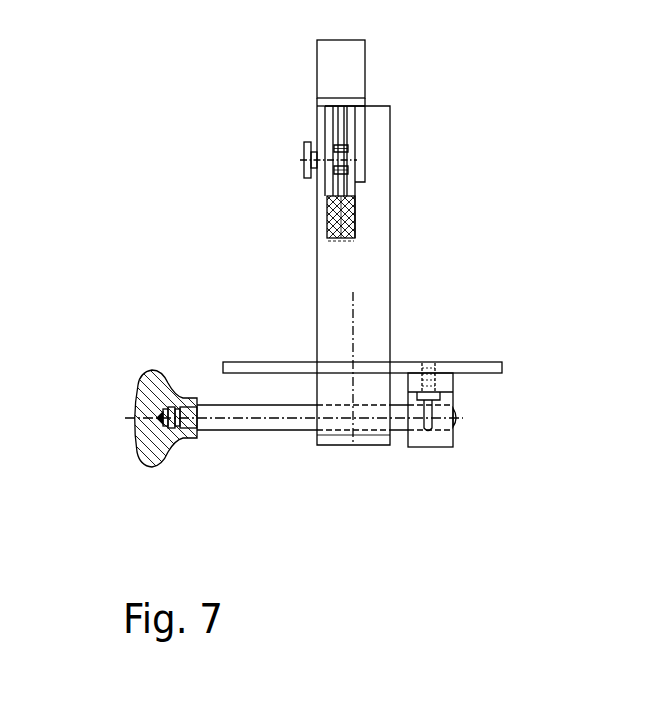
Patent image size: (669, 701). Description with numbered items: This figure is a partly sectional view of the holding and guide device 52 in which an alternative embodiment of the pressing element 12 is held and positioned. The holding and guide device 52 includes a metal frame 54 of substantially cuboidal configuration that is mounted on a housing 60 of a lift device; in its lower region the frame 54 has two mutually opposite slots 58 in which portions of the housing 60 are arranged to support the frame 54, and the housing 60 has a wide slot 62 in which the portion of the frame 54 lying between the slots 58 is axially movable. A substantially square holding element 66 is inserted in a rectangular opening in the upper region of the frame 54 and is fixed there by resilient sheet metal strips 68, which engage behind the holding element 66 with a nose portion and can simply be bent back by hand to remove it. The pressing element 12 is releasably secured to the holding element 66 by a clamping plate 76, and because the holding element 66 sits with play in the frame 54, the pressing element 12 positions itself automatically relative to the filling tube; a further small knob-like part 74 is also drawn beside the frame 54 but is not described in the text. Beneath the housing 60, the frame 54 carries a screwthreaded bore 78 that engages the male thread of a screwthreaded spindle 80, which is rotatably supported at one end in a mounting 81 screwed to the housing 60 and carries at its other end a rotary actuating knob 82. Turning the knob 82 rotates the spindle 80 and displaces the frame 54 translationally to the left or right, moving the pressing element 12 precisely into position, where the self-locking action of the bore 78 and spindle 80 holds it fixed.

The pressing element 12 is at (346, 212).
The holding and guide device 52 is at (542, 447).
The frame 54 is at (372, 257).
The slots 58 is at (364, 362).
The housing 60 is at (470, 365).
The wide slot 62 is at (275, 341).
The holding element 66 is at (323, 218).
The resilient sheet metal strips 68 is at (327, 77).
The adjusting knob 74 is at (303, 143).
The clamping plate 76 is at (355, 201).
The screwthreaded bore 78 is at (368, 440).
The screwthreaded spindle 80 is at (263, 430).
The mounting 81 is at (430, 442).
The rotary actuating knob 82 is at (155, 460).